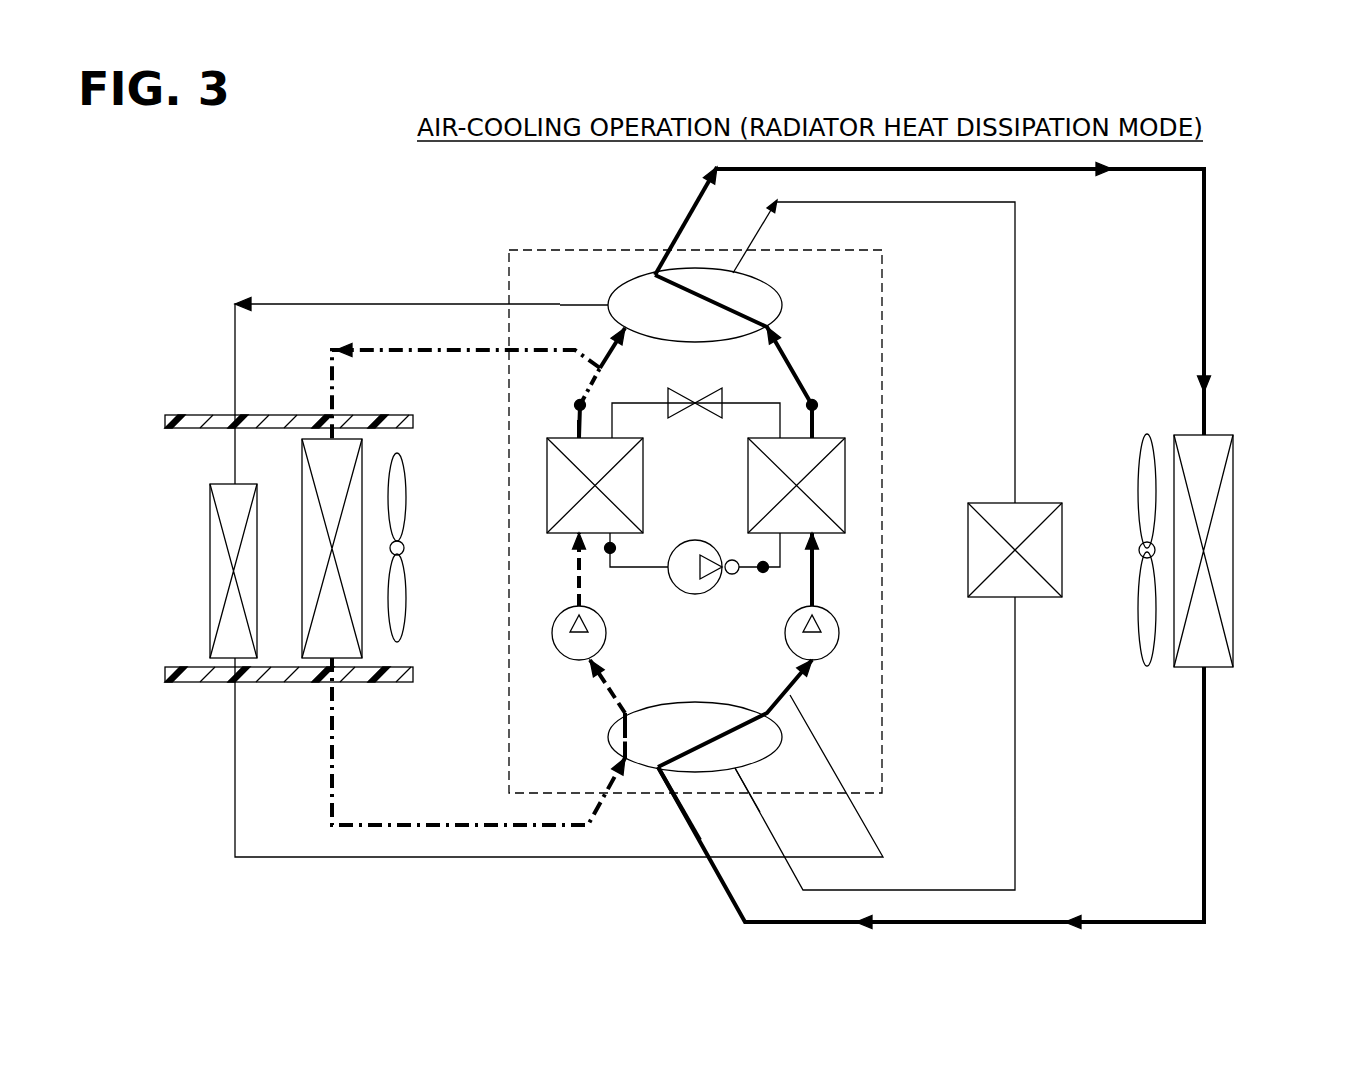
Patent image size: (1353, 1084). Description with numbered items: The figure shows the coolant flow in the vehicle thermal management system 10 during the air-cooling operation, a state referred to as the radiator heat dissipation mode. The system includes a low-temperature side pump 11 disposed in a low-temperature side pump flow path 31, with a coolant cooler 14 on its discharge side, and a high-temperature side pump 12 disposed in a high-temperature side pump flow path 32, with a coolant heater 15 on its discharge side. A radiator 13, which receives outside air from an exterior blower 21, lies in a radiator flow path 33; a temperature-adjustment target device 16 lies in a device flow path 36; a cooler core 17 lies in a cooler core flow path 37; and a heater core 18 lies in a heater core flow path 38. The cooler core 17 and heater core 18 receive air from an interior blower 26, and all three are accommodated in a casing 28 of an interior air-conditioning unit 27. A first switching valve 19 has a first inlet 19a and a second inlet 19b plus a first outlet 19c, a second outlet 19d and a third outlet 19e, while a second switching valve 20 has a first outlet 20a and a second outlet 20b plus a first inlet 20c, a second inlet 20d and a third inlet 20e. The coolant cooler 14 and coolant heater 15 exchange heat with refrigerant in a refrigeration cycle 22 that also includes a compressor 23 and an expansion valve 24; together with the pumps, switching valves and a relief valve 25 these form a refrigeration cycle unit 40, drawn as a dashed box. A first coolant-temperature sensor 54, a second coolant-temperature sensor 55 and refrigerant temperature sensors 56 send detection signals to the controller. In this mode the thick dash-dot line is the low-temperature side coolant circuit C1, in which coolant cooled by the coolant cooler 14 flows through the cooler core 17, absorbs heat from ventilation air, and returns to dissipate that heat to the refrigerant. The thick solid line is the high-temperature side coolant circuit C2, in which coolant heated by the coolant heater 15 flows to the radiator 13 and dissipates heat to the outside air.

The vehicle thermal management system 10 is at (367, 248).
The low-temperature side pump 11 is at (552, 633).
The high-temperature side pump 12 is at (839, 633).
The radiator 13 is at (1233, 540).
The coolant cooler 14 is at (547, 490).
The coolant heater 15 is at (845, 490).
The temperature-adjustment target device 16 is at (1062, 520).
The cooler core 17 is at (302, 608).
The heater core 18 is at (210, 608).
The first switching valve 19 is at (785, 292).
The first inlet 19a is at (628, 332).
The second inlet 19b is at (780, 325).
The first outlet 19c is at (650, 262).
The second outlet 19d is at (768, 272).
The third outlet 19e is at (608, 305).
The second switching valve 20 is at (605, 745).
The first outlet 20a is at (625, 713).
The second outlet 20b is at (768, 710).
The first inlet 20c is at (662, 772).
The second inlet 20d is at (740, 771).
The third inlet 20e is at (628, 765).
The exterior blower 21 is at (1145, 655).
The refrigeration cycle 22 is at (655, 572).
The compressor 23 is at (667, 540).
The expansion valve 24 is at (700, 417).
The relief valve 25 is at (733, 560).
The interior blower 26 is at (405, 640).
The interior air-conditioning unit 27 is at (183, 395).
The casing 28 is at (225, 415).
The low-temperature side pump flow path 31 is at (579, 556).
The high-temperature side pump flow path 32 is at (814, 556).
The radiator flow path 33 is at (1206, 288).
The device flow path 36 is at (1017, 368).
The cooler core flow path 37 is at (433, 355).
The heater core flow path 38 is at (415, 304).
The refrigeration cycle unit 40 is at (885, 350).
The first coolant-temperature sensor 54 is at (577, 403).
The second coolant-temperature sensor 55 is at (814, 404).
The refrigerant temperature sensor 56 is at (610, 553).
The low-temperature side coolant circuit C1 is at (577, 421).
The high-temperature side coolant circuit C2 is at (815, 420).